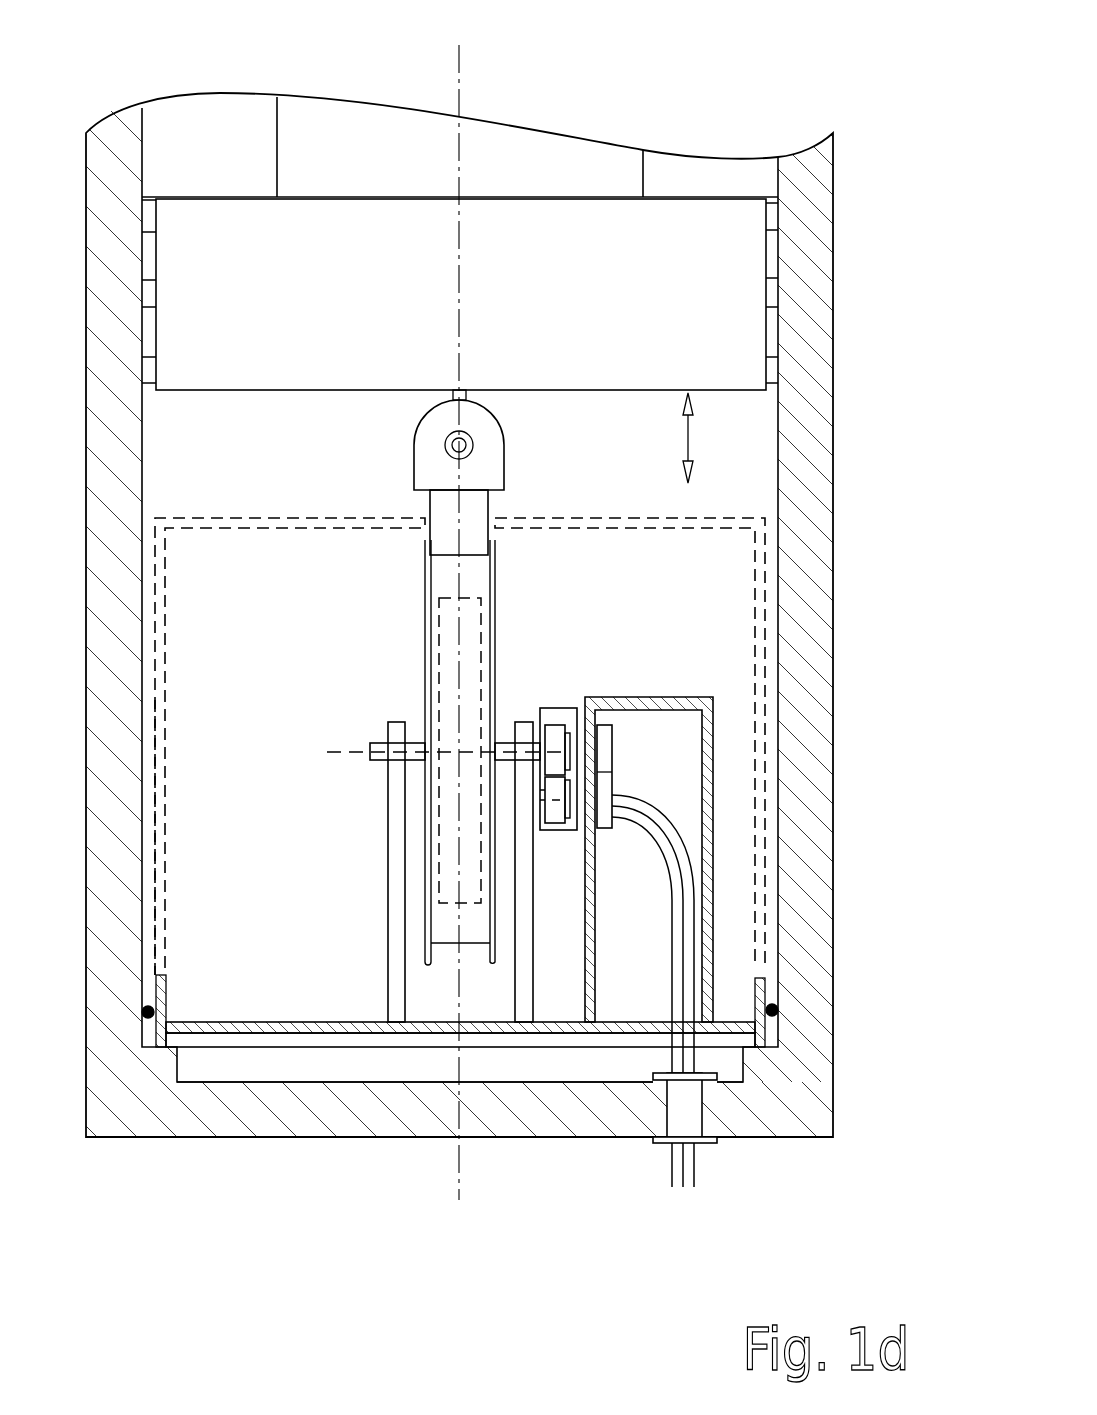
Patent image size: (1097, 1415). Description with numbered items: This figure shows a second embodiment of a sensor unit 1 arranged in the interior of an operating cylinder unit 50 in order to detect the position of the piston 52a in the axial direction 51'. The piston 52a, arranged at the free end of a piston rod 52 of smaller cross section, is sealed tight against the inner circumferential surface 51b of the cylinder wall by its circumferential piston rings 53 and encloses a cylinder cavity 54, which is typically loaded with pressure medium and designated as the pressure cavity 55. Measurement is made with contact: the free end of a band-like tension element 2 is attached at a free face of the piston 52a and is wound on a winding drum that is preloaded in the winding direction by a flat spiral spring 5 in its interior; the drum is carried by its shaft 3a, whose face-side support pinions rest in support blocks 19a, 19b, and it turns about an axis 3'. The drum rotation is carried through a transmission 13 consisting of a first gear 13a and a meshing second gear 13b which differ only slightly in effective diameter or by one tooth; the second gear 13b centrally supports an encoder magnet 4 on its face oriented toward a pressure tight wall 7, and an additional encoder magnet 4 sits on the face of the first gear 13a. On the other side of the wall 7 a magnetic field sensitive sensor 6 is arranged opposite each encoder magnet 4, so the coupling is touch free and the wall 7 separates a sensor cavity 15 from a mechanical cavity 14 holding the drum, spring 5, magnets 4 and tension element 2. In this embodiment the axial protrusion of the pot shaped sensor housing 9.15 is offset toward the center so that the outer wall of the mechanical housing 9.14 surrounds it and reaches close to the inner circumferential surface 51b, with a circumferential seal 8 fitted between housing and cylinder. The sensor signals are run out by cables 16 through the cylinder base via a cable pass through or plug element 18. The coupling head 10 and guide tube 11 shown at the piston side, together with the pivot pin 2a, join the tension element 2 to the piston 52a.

The sensor unit 1 is at (235, 497).
The tension element 2 is at (459, 522).
The pivot pin 2a is at (472, 442).
The axis of rotation 3' is at (438, 723).
The shaft of the winding drum 3a is at (370, 760).
The encoder magnet 4 is at (570, 787).
The flat spiral spring 5 is at (438, 643).
The sensor 6 is at (603, 790).
The pressure tight wall 7 is at (588, 807).
The circumferential seal 8 is at (778, 1010).
The mechanical housing 9.14 is at (163, 798).
The sensor housing 9.15 is at (275, 1023).
The coupling head 10 is at (458, 517).
The guide tube 11 is at (458, 517).
The transmission 13 is at (560, 715).
The first gear 13a is at (553, 735).
The second gear 13b is at (558, 818).
The mechanical cavity 14 is at (213, 776).
The sensor cavity 15 is at (630, 740).
The cables 16 is at (672, 892).
The plug element 18 is at (682, 1110).
The support block 19a is at (395, 893).
The support block 19b is at (552, 872).
The operating cylinder unit 50 is at (818, 80).
The axial direction 51' is at (460, 717).
The inner circumferential surface 51b is at (780, 758).
The piston rod 52 is at (277, 160).
The piston 52a is at (454, 294).
The piston rings 53 is at (770, 365).
The cylinder cavity 54 is at (722, 438).
The pressure cavity 55 is at (228, 147).